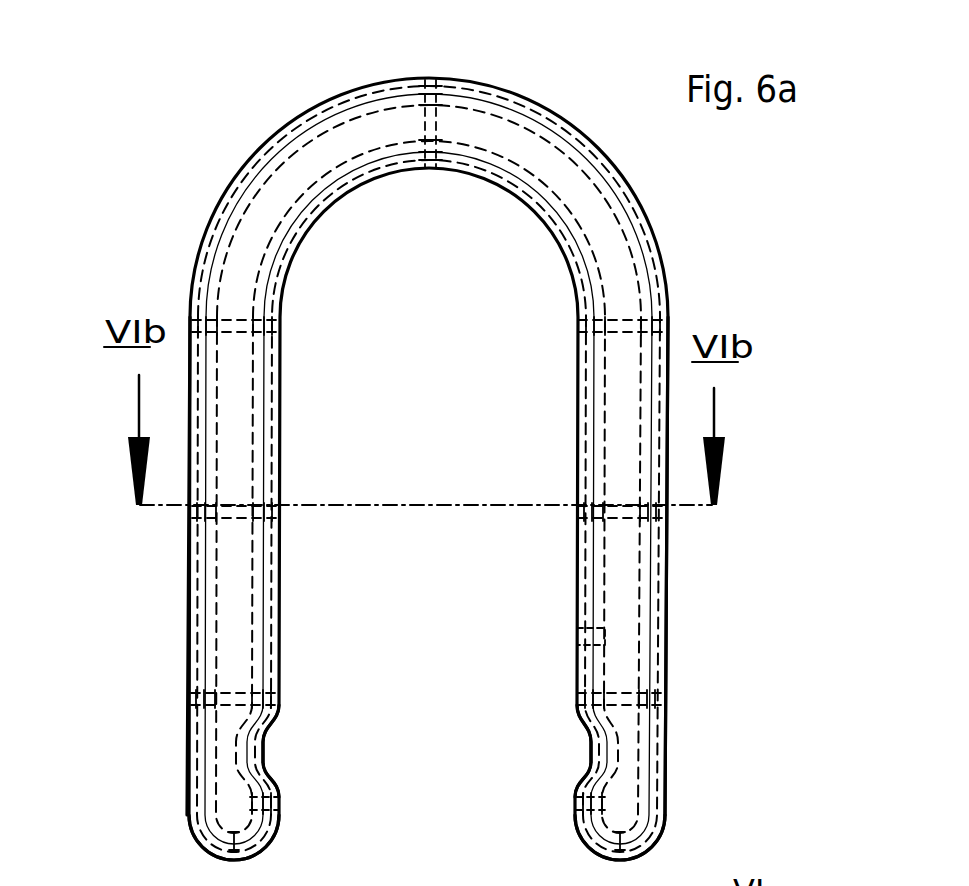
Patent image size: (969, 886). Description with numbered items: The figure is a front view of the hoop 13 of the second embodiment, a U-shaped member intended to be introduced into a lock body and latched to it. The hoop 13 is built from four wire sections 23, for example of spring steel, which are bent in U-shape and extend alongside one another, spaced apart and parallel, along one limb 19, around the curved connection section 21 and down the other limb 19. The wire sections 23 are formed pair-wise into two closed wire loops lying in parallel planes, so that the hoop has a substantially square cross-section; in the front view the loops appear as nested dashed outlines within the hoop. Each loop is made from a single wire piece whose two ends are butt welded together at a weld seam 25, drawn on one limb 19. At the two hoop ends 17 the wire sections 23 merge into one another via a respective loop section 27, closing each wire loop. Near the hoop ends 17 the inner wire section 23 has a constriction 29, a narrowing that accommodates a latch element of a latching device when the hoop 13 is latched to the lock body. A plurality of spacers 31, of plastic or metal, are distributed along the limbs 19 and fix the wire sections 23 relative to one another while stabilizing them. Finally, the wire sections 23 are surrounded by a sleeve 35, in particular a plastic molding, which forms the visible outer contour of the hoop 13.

The hoop 13 is at (261, 104).
The hoop ends 17 is at (170, 836).
The limb 19 is at (186, 622).
The connection section 21 is at (232, 188).
The wire sections 23 is at (275, 262).
The weld seam 25 is at (578, 636).
The loop section 27 is at (262, 855).
The constriction 29 is at (280, 752).
The spacers 31 is at (233, 522).
The sleeve 35 is at (508, 138).